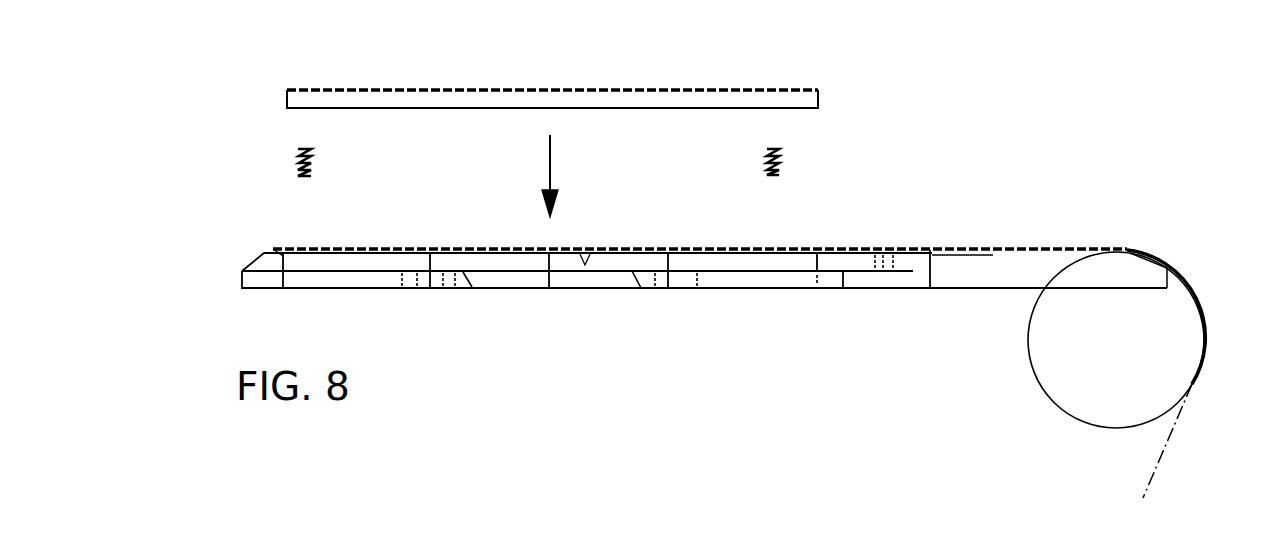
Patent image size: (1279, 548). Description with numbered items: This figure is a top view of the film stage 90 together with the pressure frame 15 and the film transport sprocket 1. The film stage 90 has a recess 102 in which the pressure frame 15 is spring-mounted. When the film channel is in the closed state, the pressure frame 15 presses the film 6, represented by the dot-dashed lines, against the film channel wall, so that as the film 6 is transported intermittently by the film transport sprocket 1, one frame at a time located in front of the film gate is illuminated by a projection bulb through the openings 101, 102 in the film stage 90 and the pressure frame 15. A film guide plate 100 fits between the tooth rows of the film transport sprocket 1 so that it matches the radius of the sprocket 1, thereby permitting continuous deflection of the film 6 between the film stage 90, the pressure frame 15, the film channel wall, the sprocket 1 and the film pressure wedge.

The pressure frame 15 is at (743, 102).
The recess 102 is at (605, 92).
The film guide plate 100 is at (1010, 258).
The opening 101 is at (503, 280).
The film stage 90 is at (717, 280).
The film 6 is at (945, 252).
The film transport sprocket 1 is at (1180, 315).